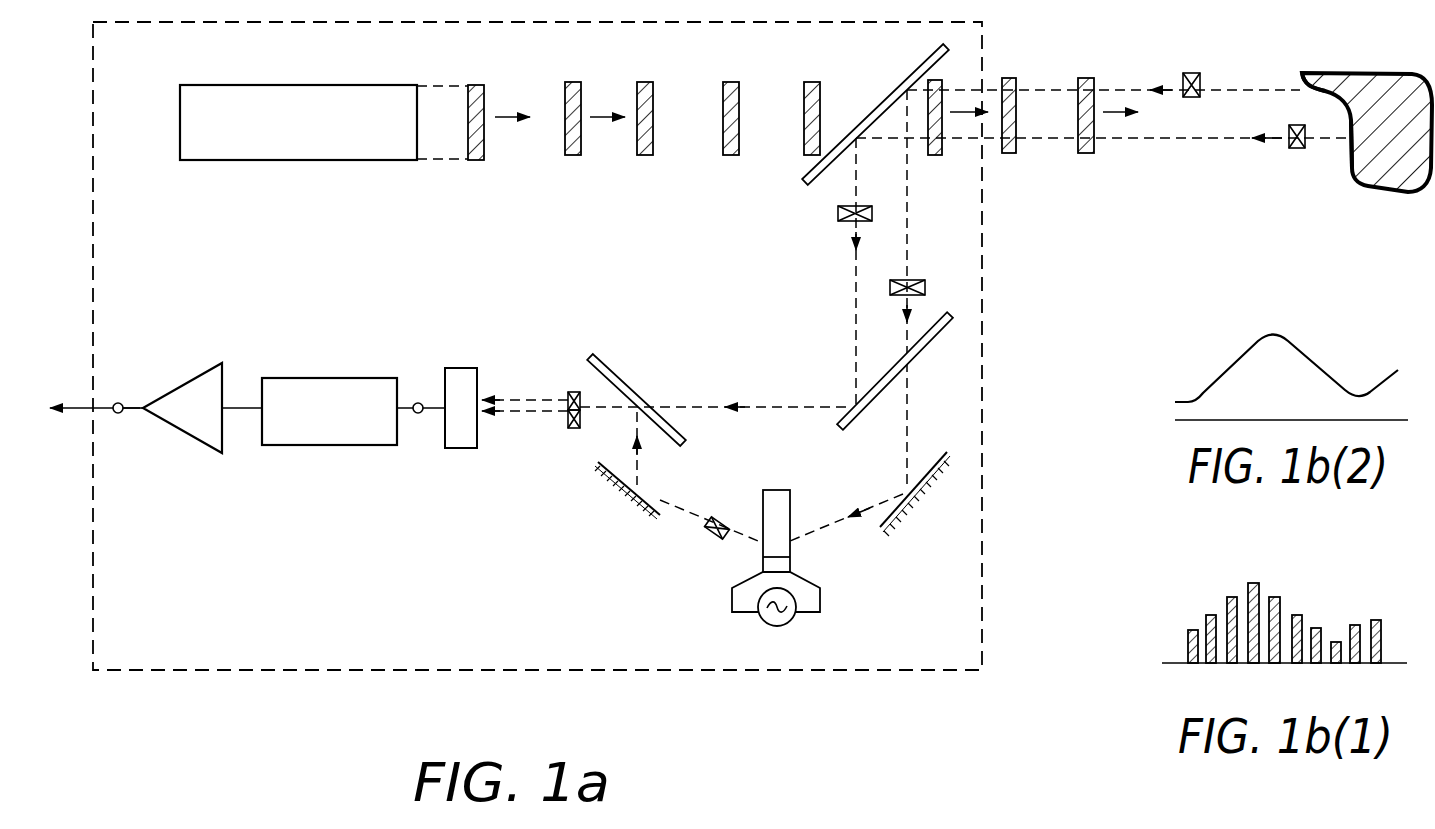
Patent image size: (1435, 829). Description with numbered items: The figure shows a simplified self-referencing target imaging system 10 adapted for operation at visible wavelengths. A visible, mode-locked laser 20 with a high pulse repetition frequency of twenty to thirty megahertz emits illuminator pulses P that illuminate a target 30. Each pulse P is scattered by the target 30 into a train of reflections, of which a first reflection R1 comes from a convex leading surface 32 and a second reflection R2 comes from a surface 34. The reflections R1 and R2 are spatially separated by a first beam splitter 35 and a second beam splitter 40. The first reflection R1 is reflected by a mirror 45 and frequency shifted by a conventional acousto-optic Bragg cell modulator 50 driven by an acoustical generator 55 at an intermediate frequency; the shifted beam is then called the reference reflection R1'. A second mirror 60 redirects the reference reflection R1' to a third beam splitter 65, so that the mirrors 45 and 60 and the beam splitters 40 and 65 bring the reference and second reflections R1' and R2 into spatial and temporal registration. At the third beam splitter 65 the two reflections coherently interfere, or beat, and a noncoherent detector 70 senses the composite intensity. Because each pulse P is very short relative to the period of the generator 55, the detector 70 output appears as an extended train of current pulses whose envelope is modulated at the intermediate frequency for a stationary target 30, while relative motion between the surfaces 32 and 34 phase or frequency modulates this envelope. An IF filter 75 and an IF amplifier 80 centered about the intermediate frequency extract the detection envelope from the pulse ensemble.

The self-referencing target imaging system 10 is at (310, 685).
The mode-locked laser 20 is at (332, 85).
The illuminator pulse P is at (645, 82).
The first beam splitter 35 is at (905, 78).
The target 30 is at (1362, 82).
The convex leading surface 32 is at (1302, 74).
The surface 34 is at (1344, 147).
The first reflection R1 is at (1045, 157).
The second reflection R2 is at (1296, 149).
The reference reflection R1' is at (613, 500).
The second beam splitter 40 is at (930, 338).
The mirror 45 is at (941, 466).
The acousto-optic Bragg cell modulator 50 is at (793, 512).
The acoustical generator 55 is at (766, 626).
The second mirror 60 is at (624, 470).
The third beam splitter 65 is at (625, 382).
The noncoherent detector 70 is at (456, 368).
The IF filter 75 is at (333, 378).
The IF amplifier 80 is at (189, 383).